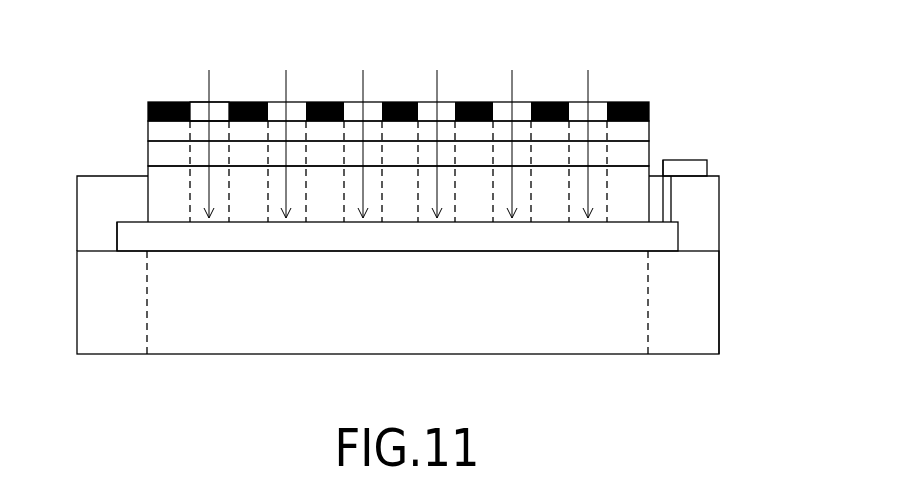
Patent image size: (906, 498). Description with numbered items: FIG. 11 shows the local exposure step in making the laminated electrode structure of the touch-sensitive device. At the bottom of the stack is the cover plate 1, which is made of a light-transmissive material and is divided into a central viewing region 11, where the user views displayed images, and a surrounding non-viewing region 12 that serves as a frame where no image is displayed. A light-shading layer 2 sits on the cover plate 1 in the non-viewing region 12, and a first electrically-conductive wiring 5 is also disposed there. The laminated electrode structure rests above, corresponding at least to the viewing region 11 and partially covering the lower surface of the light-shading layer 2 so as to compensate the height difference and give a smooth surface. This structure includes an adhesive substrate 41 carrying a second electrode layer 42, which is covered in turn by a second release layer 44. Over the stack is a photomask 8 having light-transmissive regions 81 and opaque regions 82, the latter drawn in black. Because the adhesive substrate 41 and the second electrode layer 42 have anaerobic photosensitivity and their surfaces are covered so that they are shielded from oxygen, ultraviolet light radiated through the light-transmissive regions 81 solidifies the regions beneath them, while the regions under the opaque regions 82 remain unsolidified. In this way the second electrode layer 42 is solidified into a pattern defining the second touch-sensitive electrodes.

The cover plate 1 is at (83, 423).
The viewing region 11 is at (187, 338).
The non-viewing region 12 is at (113, 335).
The light-shading layer 2 is at (90, 207).
The first electrically-conductive wiring 5 is at (689, 152).
The photomask 8 is at (618, 93).
The light-transmissive regions 81 is at (199, 112).
The opaque regions 82 is at (245, 105).
The adhesive substrate 41 is at (625, 210).
The second electrode layer 42 is at (170, 151).
The second release layer 44 is at (167, 128).